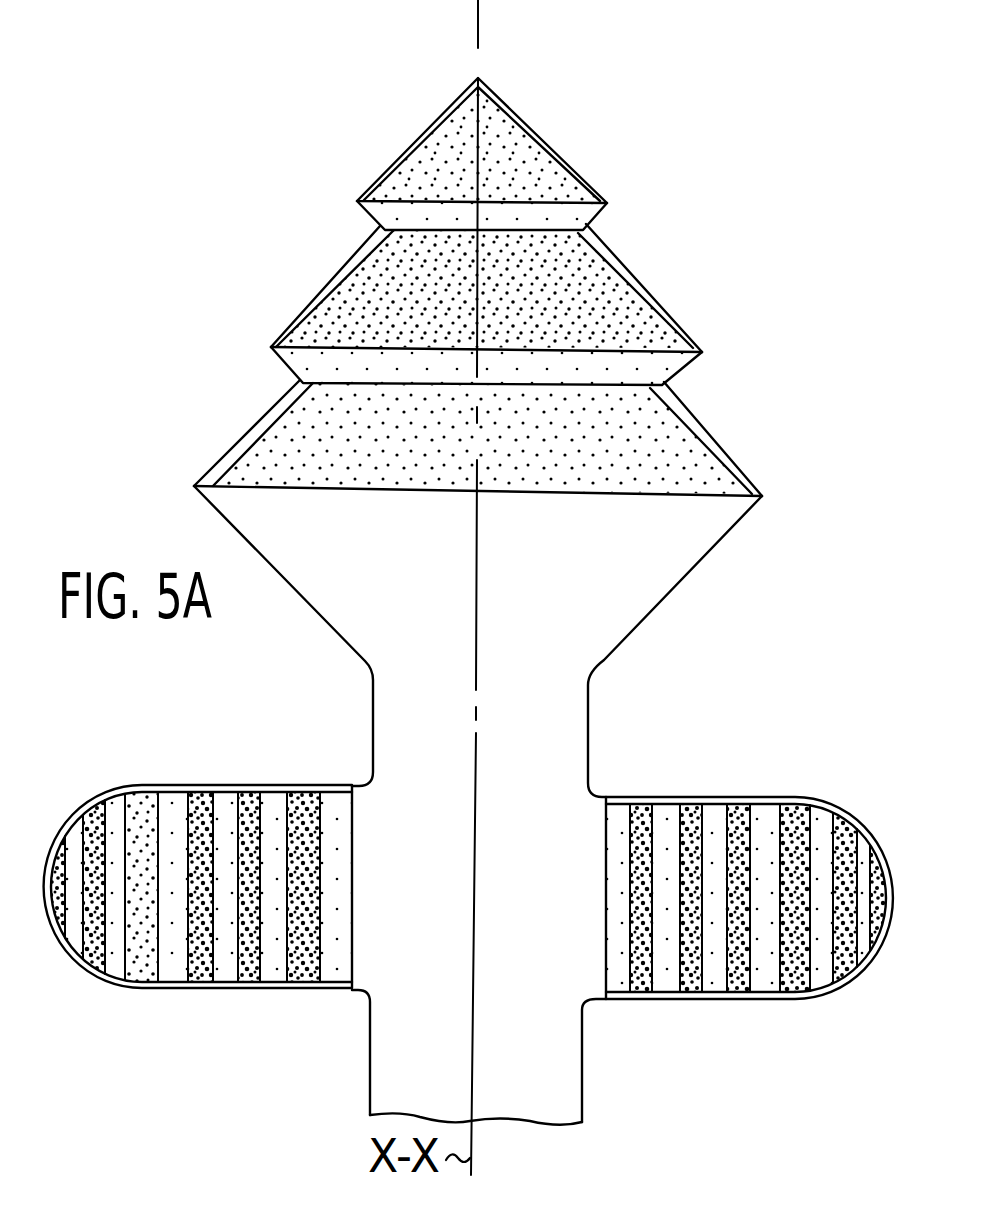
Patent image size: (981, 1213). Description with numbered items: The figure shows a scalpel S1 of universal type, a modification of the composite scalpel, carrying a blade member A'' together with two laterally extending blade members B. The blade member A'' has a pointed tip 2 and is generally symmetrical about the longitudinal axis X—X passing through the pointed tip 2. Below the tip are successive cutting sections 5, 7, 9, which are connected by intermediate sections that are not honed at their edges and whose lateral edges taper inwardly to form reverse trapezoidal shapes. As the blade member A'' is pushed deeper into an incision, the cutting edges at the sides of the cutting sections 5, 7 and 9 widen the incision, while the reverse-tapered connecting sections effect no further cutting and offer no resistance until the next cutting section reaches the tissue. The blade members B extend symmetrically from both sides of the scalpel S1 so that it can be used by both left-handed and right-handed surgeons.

The pointed tip 2 is at (478, 78).
The cutting section 5 is at (507, 143).
The cutting section 7 is at (383, 288).
The cutting section 9 is at (293, 448).
The scalpel S1 is at (295, 205).
The blade member A'' is at (733, 406).
The blade member B is at (260, 792).